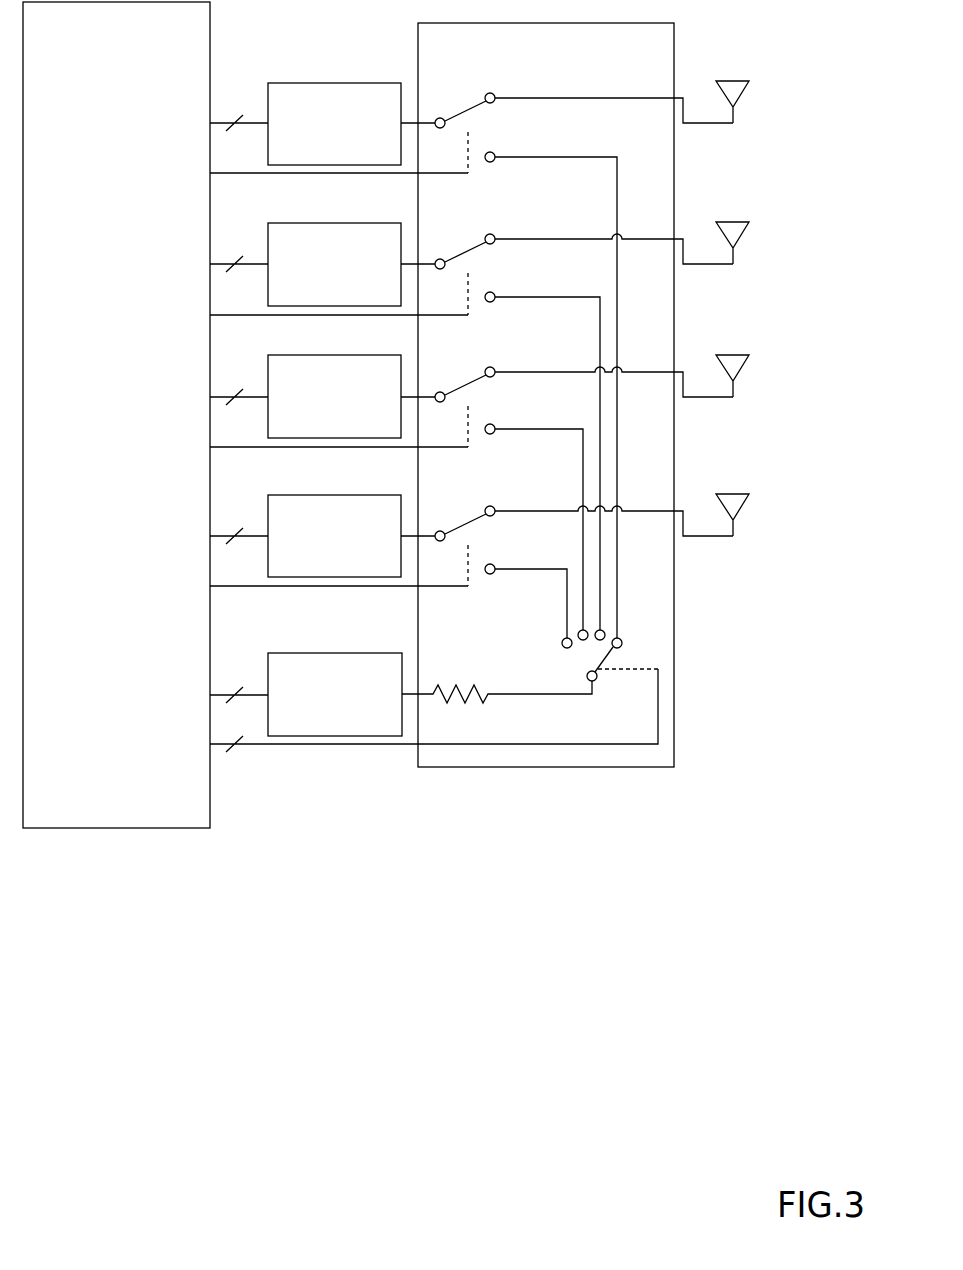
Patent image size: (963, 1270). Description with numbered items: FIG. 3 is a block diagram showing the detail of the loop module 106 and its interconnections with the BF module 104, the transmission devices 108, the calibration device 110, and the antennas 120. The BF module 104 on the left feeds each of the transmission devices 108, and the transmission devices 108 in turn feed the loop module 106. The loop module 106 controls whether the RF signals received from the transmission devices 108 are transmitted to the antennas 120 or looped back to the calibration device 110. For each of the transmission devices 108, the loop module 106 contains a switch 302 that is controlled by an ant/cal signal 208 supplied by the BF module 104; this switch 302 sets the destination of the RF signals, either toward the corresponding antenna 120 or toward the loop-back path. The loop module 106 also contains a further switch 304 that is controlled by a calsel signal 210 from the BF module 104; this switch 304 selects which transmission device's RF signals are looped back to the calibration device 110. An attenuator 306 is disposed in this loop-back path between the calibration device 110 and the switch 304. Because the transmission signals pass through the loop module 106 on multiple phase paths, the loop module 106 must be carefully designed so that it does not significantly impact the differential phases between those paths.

The BF module 104 is at (116, 415).
The loop module 106 is at (546, 395).
The transmission device 108 is at (287, 92).
The calibration device 110 is at (288, 727).
The antenna 120 is at (725, 63).
The ant/cal signal 208 is at (278, 359).
The calsel signal 210 is at (379, 713).
The switch 302 is at (467, 333).
The switch 304 is at (574, 654).
The attenuator 306 is at (460, 709).